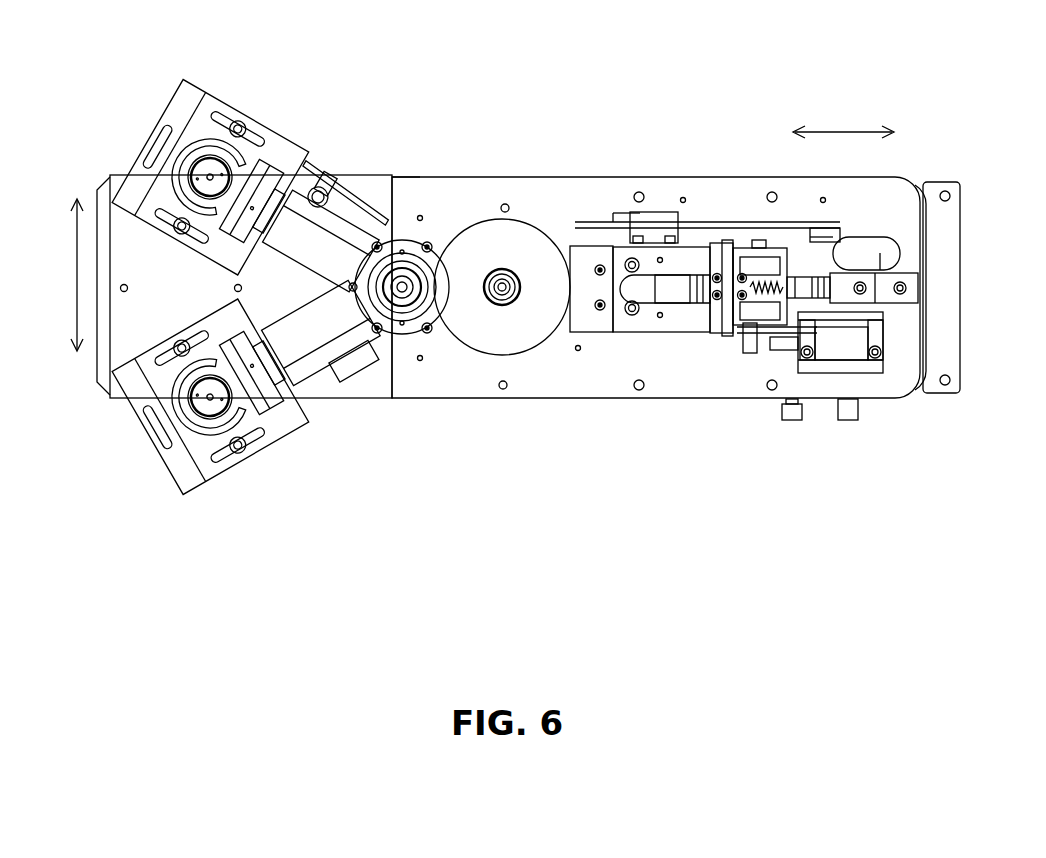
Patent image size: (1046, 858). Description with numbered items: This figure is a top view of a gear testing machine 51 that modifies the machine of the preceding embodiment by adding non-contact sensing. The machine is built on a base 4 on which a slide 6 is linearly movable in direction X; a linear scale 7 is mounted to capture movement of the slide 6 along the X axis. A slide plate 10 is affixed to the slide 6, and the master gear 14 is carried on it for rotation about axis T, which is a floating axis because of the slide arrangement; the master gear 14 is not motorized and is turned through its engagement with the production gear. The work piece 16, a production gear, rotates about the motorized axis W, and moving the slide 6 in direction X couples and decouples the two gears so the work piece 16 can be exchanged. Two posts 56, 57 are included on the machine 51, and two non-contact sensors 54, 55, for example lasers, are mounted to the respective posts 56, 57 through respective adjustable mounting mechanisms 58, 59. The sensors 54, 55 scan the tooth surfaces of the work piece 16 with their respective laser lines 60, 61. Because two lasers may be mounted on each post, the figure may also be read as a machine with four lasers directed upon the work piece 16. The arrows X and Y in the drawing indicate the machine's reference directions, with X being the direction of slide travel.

The base 4 is at (692, 400).
The slide 6 is at (690, 255).
The linear scale 7 is at (578, 220).
The slide plate 10 is at (590, 250).
The master gear 14 is at (515, 232).
The work piece 16 is at (405, 283).
The machine 51 is at (408, 153).
The non-contact sensor 54 is at (332, 372).
The non-contact sensor 55 is at (300, 262).
The post 56 is at (210, 397).
The post 57 is at (212, 177).
The adjustable mounting mechanism 58 is at (170, 390).
The adjustable mounting mechanism 59 is at (197, 140).
The laser line 60 is at (378, 320).
The laser line 61 is at (377, 245).
The axis W is at (407, 295).
The axis T is at (508, 296).
The direction X is at (843, 116).
The Y direction Y is at (62, 275).